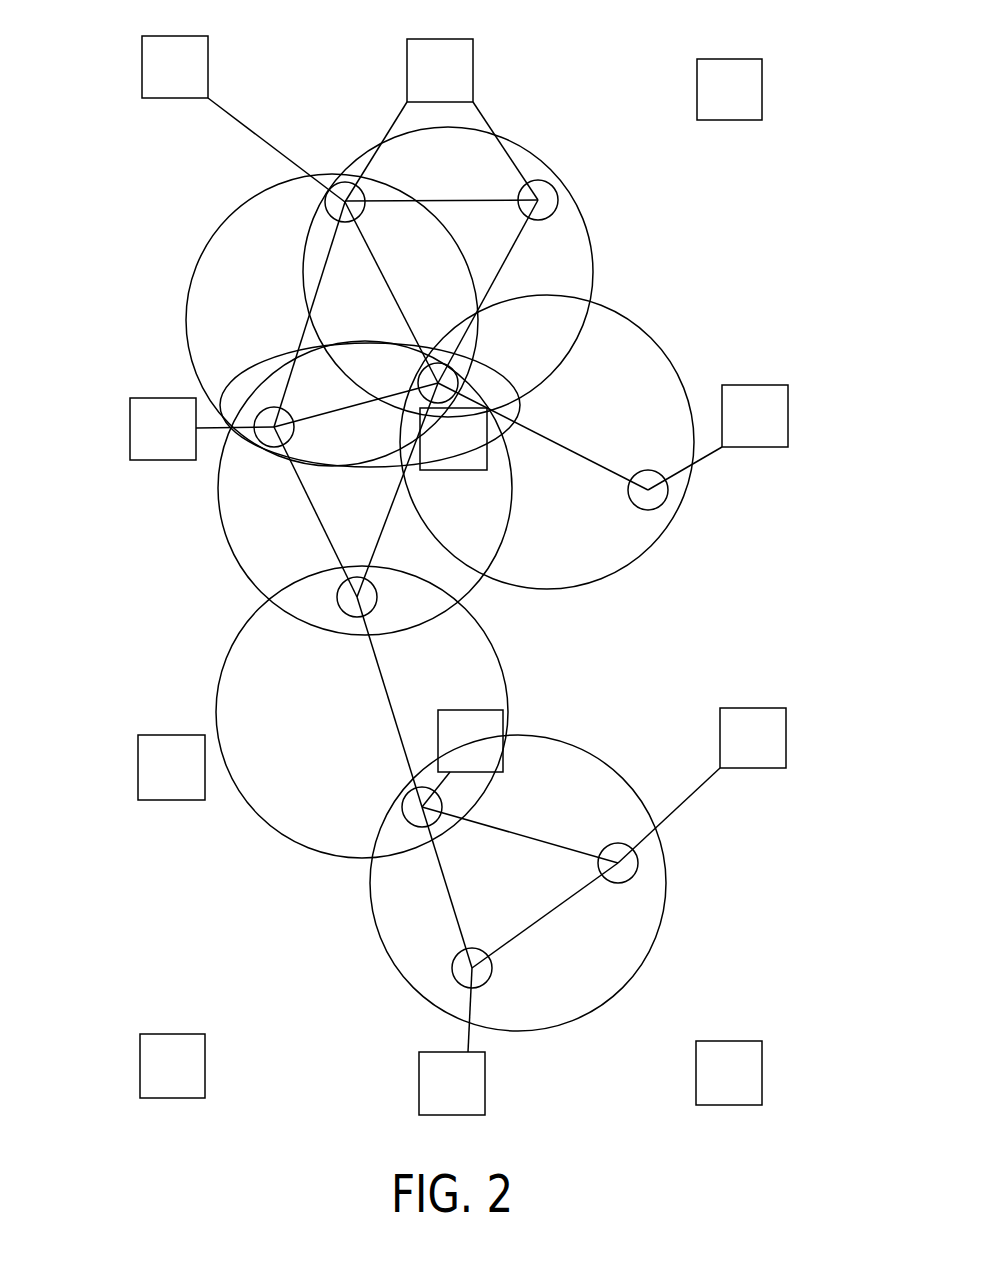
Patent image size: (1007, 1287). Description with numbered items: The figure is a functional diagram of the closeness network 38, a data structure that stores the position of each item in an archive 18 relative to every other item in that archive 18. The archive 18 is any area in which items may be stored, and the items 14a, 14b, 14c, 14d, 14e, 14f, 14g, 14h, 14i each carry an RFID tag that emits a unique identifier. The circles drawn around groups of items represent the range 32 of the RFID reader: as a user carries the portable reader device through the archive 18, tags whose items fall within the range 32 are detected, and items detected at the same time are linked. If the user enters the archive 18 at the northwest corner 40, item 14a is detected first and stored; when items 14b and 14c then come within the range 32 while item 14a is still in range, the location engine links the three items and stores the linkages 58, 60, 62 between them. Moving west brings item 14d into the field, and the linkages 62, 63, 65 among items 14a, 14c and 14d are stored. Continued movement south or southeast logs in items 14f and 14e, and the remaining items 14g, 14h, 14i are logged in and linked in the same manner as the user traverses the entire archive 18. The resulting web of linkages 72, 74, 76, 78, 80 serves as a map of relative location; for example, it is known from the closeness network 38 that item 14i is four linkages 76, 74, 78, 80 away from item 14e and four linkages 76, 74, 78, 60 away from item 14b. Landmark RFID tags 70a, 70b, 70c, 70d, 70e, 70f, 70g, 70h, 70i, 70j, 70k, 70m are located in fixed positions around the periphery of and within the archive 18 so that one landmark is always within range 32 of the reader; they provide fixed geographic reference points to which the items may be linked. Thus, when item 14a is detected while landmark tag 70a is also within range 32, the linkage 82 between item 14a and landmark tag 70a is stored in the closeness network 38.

The item 14a is at (345, 200).
The item 14b is at (538, 200).
The item 14c is at (445, 378).
The item 14d is at (272, 425).
The item 14e is at (650, 492).
The item 14f is at (355, 595).
The network node 14g is at (420, 806).
The network node 14h is at (622, 866).
The item 14i is at (475, 968).
The archive 18 is at (296, 962).
The range 32 is at (593, 240).
The closeness network data structure 38 is at (148, 543).
The northwest corner 40 is at (120, 151).
The linkage 58 is at (462, 198).
The linkage 60 is at (510, 255).
The linkage 62 is at (379, 268).
The linkage 63 is at (304, 300).
The linkage 65 is at (327, 415).
The landmark RFID tag 70a is at (208, 67).
The device 70b is at (473, 70).
The device 70c is at (697, 88).
The device 70d is at (130, 420).
The device 70e is at (788, 417).
The device 70f is at (138, 762).
The device 70g is at (786, 737).
The device 70h is at (205, 1065).
The device 70i is at (486, 1082).
The device 70j is at (762, 1072).
The device 70k is at (453, 470).
The device 70m is at (472, 710).
The linkage 72 is at (300, 495).
The linkage 74 is at (381, 692).
The linkage 76 is at (452, 912).
The linkage 78 is at (400, 485).
The linkage 80 is at (568, 450).
The linkage 82 is at (230, 118).